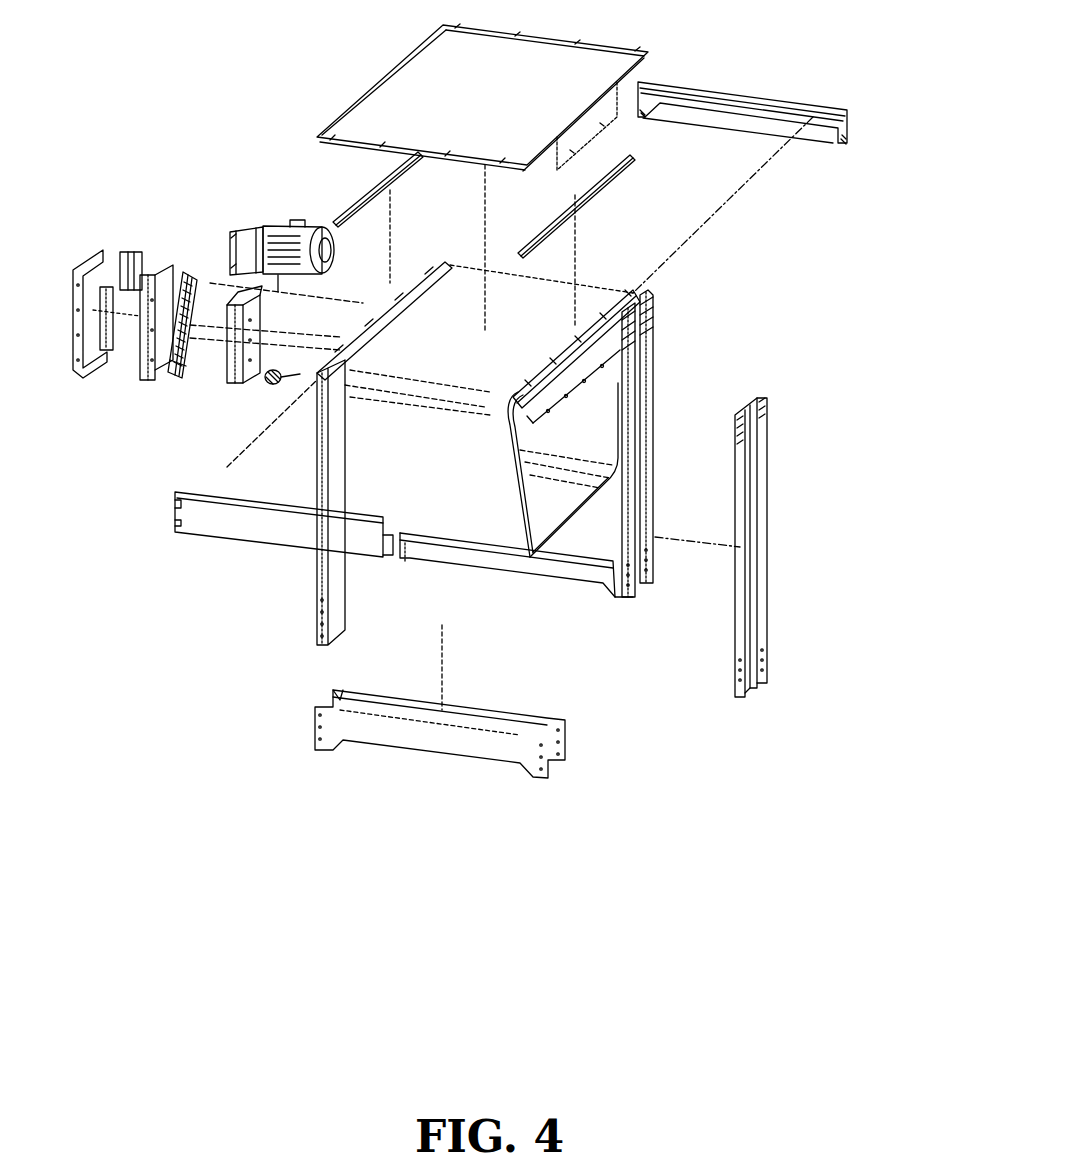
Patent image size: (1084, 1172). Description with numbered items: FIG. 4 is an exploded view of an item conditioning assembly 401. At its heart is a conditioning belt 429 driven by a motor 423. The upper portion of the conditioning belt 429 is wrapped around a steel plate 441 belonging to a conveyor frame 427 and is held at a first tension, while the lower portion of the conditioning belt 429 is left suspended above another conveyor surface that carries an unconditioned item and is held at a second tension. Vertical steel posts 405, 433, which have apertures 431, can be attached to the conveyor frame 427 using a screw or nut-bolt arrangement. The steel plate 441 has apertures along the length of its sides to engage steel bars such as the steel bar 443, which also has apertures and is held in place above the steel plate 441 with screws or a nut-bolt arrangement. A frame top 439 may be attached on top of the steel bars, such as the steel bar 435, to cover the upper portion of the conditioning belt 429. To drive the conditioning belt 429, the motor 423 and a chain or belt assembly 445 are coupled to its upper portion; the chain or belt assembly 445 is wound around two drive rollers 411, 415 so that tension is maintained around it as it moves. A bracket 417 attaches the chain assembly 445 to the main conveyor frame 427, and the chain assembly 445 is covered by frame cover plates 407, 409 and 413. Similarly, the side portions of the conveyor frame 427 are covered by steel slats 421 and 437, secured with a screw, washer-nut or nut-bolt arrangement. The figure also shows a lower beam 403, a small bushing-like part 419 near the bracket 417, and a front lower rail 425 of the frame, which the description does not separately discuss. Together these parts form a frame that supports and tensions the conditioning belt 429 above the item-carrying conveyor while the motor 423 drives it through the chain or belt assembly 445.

The item conditioning assembly 401 is at (890, 257).
The bottom beam 403 is at (568, 735).
The vertical steel post 405 is at (767, 512).
The frame cover plate 407 is at (90, 258).
The frame cover plate 409 is at (137, 250).
The drive roller 411 is at (192, 268).
The frame cover plate 413 is at (143, 372).
The drive roller 415 is at (180, 370).
The bracket 417 is at (227, 382).
The bushing 419 is at (270, 380).
The steel slat 421 is at (212, 538).
The motor 423 is at (293, 225).
The front lower rail 425 is at (530, 557).
The conveyor frame 427 is at (615, 380).
The conditioning belt 429 is at (488, 332).
The apertures 431 is at (647, 338).
The vertical steel post 433 is at (655, 315).
The steel bar 435 is at (605, 192).
The steel slat 437 is at (768, 92).
The frame top 439 is at (385, 74).
The steel plate 441 is at (630, 297).
The steel bar 443 is at (557, 398).
The chain or belt assembly 445 is at (190, 330).